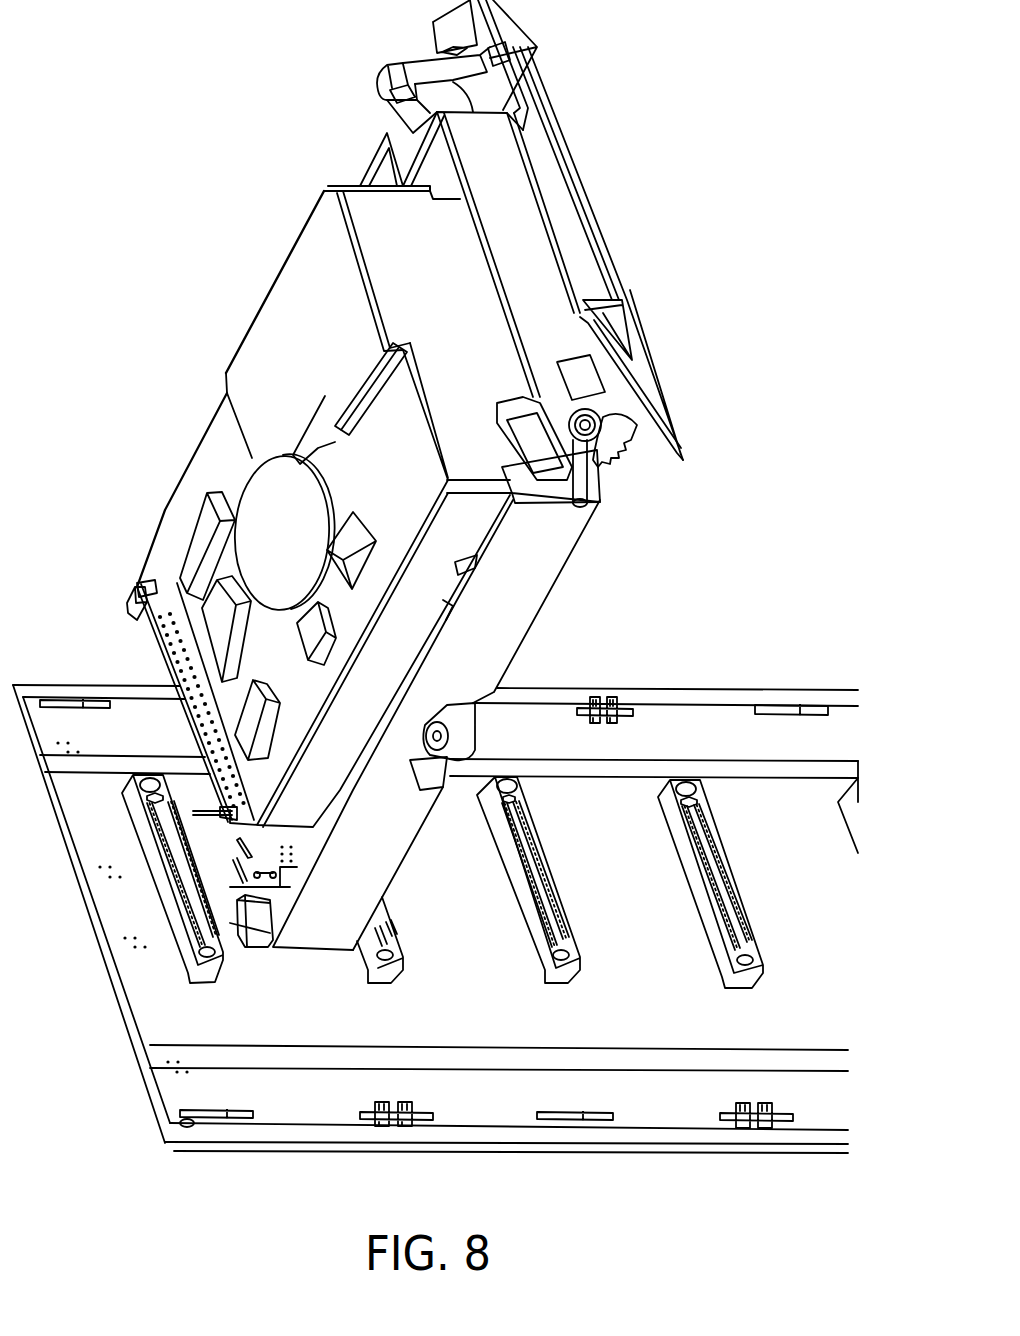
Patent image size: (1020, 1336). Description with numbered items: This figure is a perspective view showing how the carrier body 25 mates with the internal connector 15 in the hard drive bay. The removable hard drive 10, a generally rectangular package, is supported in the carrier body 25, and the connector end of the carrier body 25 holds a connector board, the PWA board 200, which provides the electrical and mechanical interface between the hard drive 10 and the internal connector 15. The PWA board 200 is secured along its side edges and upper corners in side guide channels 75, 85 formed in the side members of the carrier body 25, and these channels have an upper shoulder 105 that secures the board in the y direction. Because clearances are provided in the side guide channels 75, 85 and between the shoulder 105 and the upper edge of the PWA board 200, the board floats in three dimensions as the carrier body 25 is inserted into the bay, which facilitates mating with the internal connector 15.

The hard drive 10 is at (267, 347).
The internal connector 15 is at (187, 951).
The carrier body 25 is at (517, 603).
The side guide channel 75 is at (133, 600).
The side guide channel 85 is at (236, 935).
The upper shoulder 105 is at (139, 585).
The PWA board 200 is at (165, 633).